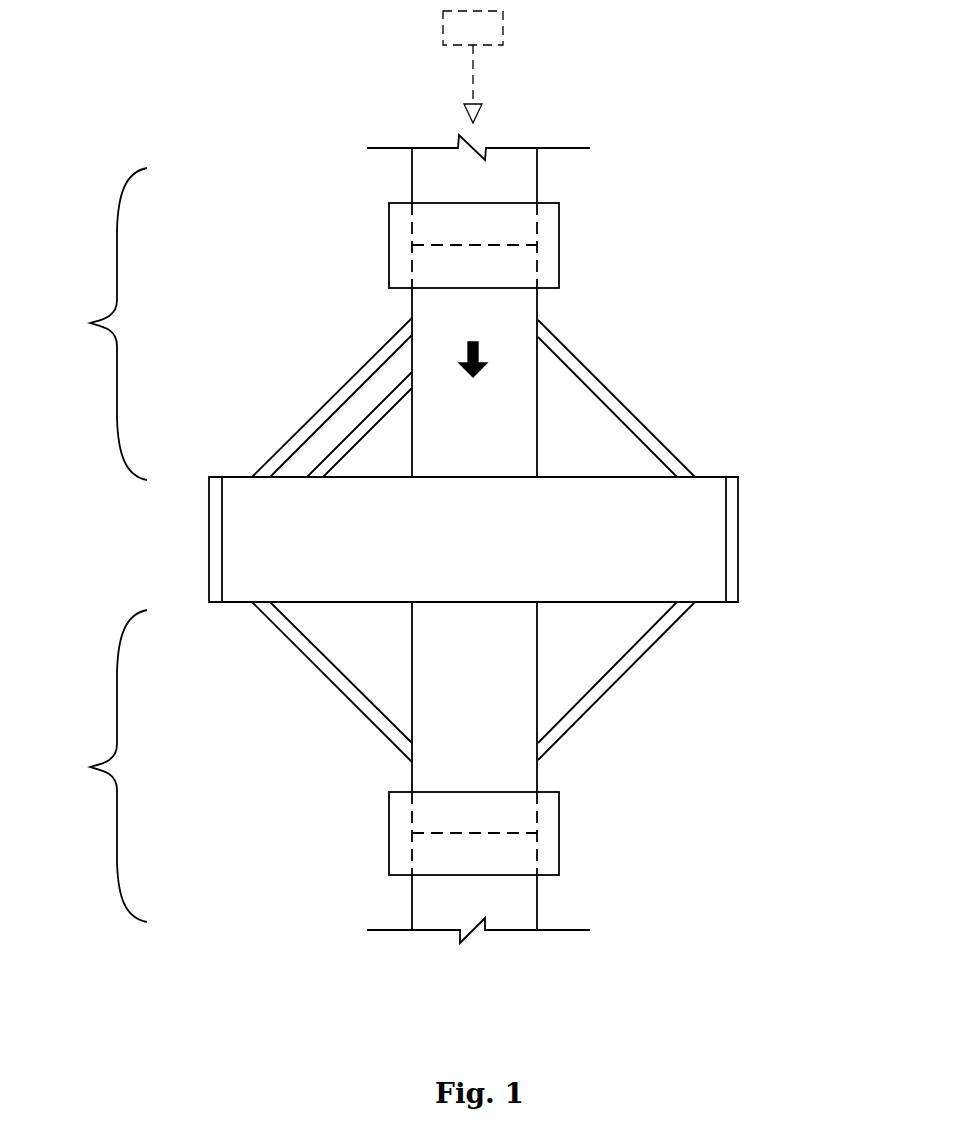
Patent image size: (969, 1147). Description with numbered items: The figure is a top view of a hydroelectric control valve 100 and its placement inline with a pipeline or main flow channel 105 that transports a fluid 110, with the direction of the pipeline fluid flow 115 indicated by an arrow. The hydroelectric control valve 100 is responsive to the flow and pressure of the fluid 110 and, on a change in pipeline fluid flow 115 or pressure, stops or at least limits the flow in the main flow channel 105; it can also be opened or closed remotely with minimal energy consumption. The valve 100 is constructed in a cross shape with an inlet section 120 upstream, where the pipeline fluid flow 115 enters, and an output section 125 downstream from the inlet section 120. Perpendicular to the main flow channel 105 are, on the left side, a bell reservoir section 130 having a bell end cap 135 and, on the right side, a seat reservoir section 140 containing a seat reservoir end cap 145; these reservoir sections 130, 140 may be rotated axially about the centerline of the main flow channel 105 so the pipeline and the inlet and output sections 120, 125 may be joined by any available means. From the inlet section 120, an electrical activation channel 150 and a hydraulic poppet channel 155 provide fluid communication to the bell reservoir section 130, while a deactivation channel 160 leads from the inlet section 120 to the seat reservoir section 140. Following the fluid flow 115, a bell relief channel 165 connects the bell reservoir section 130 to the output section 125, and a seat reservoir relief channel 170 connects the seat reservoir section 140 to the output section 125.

The hydroelectric control valve 100 is at (560, 960).
The main flow channel 105 is at (508, 177).
The fluid 110 is at (473, 67).
The pipeline fluid flow 115 is at (480, 352).
The inlet section 120 is at (97, 324).
The output section 125 is at (99, 766).
The bell reservoir section 130 is at (240, 473).
The bell end cap 135 is at (215, 550).
The seat reservoir section 140 is at (718, 475).
The seat reservoir end cap 145 is at (735, 546).
The electrical activation channel 150 is at (357, 378).
The hydraulic poppet channel 155 is at (345, 443).
The deactivation channel 160 is at (592, 378).
The bell relief channel 165 is at (313, 652).
The seat reservoir relief channel 170 is at (630, 658).